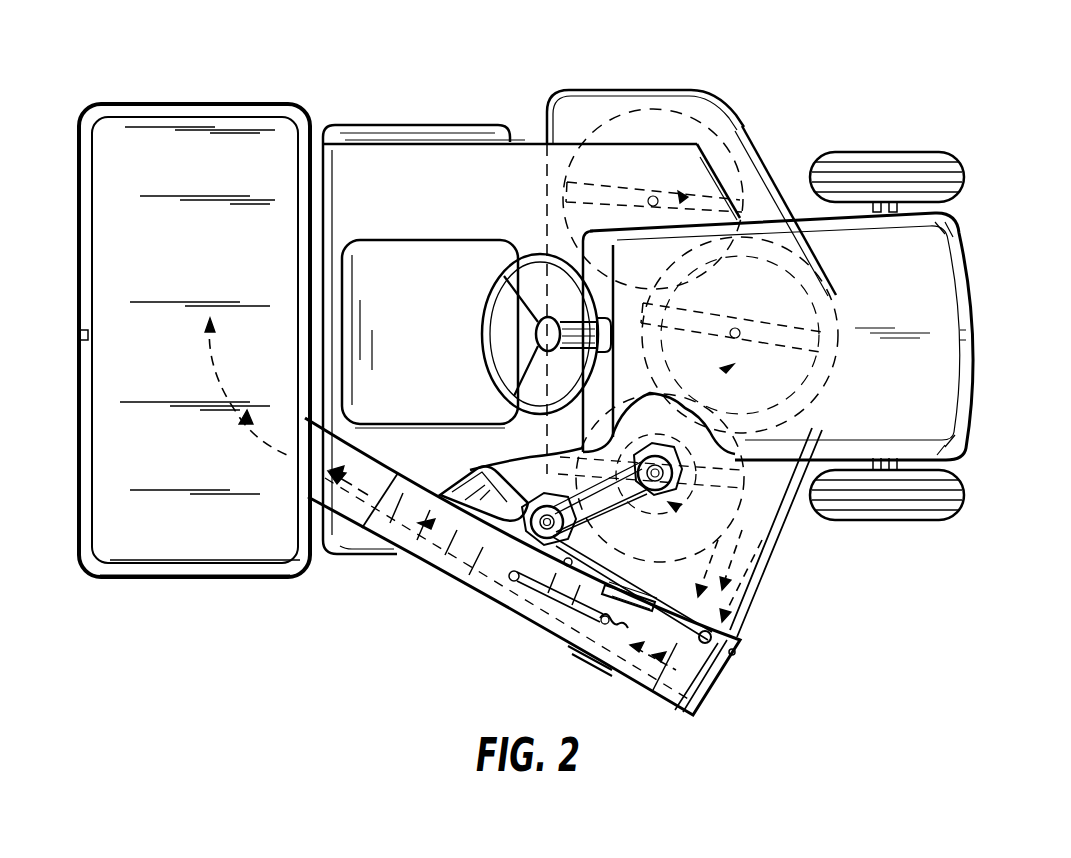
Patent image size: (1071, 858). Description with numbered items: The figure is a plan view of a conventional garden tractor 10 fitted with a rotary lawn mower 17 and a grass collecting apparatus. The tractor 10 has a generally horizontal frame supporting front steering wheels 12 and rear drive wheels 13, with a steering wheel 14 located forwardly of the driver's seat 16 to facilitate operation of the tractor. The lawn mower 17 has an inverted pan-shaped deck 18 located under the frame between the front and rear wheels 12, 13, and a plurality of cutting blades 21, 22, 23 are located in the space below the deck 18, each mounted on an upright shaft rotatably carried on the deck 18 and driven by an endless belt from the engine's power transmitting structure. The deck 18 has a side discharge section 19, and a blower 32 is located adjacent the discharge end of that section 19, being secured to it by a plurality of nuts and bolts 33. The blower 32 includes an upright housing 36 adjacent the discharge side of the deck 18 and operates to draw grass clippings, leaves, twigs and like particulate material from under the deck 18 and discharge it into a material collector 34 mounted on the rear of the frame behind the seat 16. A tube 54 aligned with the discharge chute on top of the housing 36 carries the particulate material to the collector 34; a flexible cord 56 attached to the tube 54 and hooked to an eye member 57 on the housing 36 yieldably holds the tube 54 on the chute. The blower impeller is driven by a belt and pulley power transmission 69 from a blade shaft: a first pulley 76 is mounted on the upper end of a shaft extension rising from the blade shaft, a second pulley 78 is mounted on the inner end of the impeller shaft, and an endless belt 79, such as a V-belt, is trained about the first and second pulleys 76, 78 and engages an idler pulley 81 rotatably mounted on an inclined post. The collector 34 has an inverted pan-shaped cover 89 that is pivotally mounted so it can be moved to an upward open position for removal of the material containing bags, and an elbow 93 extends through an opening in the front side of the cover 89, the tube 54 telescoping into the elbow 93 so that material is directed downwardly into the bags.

The garden tractor 10 is at (828, 100).
The front steering wheels 12 is at (903, 160).
The rear drive wheels 13 is at (422, 128).
The steering wheel 14 is at (538, 260).
The driver's seat 16 is at (414, 255).
The rotary lawn mower 17 is at (740, 120).
The deck 18 is at (610, 105).
The side discharge section 19 is at (742, 582).
The cutting blade 21 is at (592, 162).
The cutting blade 22 is at (835, 296).
The cutting blade 23 is at (738, 512).
The blower 32 is at (570, 672).
The nuts and bolts 33 is at (734, 652).
The material collector 34 is at (180, 582).
The housing 36 is at (700, 690).
The tube 54 is at (452, 566).
The flexible cord 56 is at (530, 602).
The eye member 57 is at (626, 643).
The belt and pulley power transmission 69 is at (520, 500).
The first pulley 76 is at (627, 422).
The second pulley 78 is at (644, 580).
The endless belt 79 is at (594, 504).
The idler pulley 81 is at (538, 538).
The cover 89 is at (222, 140).
The elbow 93 is at (336, 493).